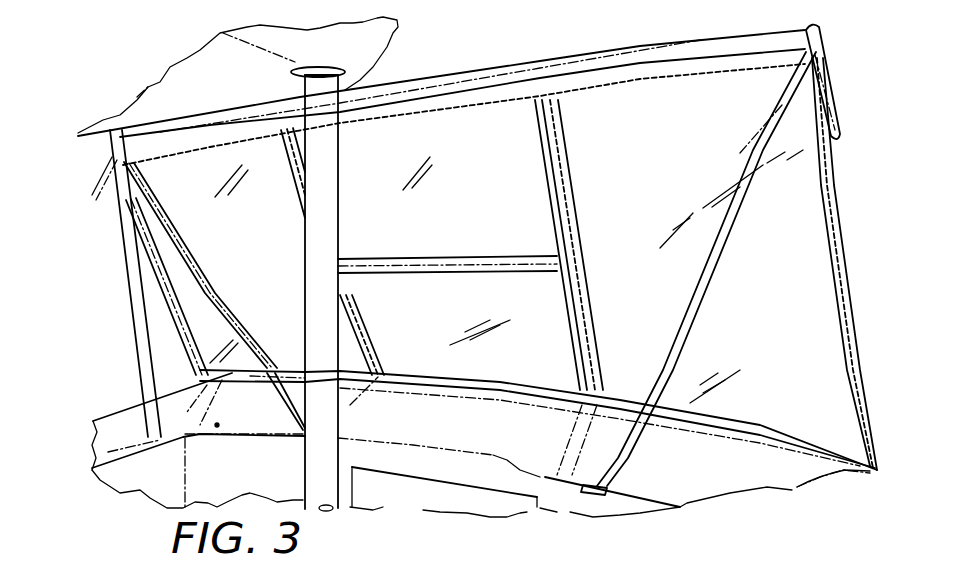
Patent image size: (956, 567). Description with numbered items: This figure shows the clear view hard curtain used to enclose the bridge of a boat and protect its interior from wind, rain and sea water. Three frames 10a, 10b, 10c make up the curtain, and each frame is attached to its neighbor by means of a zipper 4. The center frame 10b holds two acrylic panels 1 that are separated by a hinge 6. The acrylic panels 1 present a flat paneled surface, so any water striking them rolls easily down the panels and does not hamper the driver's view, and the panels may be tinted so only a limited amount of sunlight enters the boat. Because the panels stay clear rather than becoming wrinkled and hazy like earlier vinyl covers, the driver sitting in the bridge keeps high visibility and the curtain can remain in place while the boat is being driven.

The acrylic panel 1 is at (458, 157).
The zipper 4 is at (577, 383).
The hinge 6 is at (452, 268).
The frame 10a is at (225, 262).
The frame 10b is at (395, 228).
The frame 10c is at (781, 398).